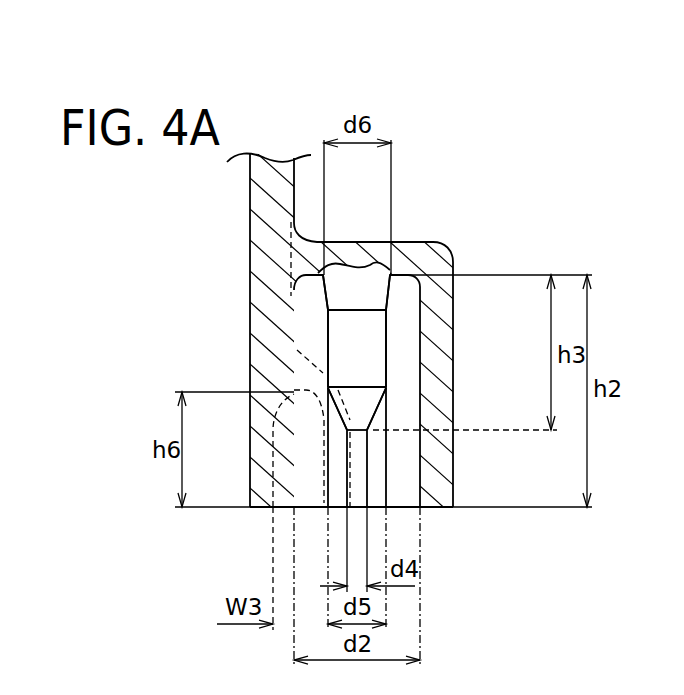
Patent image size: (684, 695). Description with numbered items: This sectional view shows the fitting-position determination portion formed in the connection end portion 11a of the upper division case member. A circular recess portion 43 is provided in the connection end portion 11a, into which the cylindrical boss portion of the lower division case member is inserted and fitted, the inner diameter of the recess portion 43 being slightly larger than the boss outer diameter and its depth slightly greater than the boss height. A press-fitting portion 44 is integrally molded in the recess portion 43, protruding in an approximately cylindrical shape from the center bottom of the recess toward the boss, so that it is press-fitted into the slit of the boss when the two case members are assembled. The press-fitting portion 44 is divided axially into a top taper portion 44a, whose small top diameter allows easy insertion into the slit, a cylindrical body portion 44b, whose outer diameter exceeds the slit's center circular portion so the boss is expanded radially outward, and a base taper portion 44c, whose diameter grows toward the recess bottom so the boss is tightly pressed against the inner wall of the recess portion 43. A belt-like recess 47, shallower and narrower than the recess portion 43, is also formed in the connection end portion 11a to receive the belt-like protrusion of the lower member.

The connection end portion 11a is at (258, 508).
The circular recess portion 43 is at (403, 497).
The press-fitting portion 44 is at (393, 340).
The top taper portion 44a is at (365, 408).
The body portion 44b is at (365, 353).
The base taper portion 44c is at (365, 292).
The belt-like recess 47 is at (250, 459).